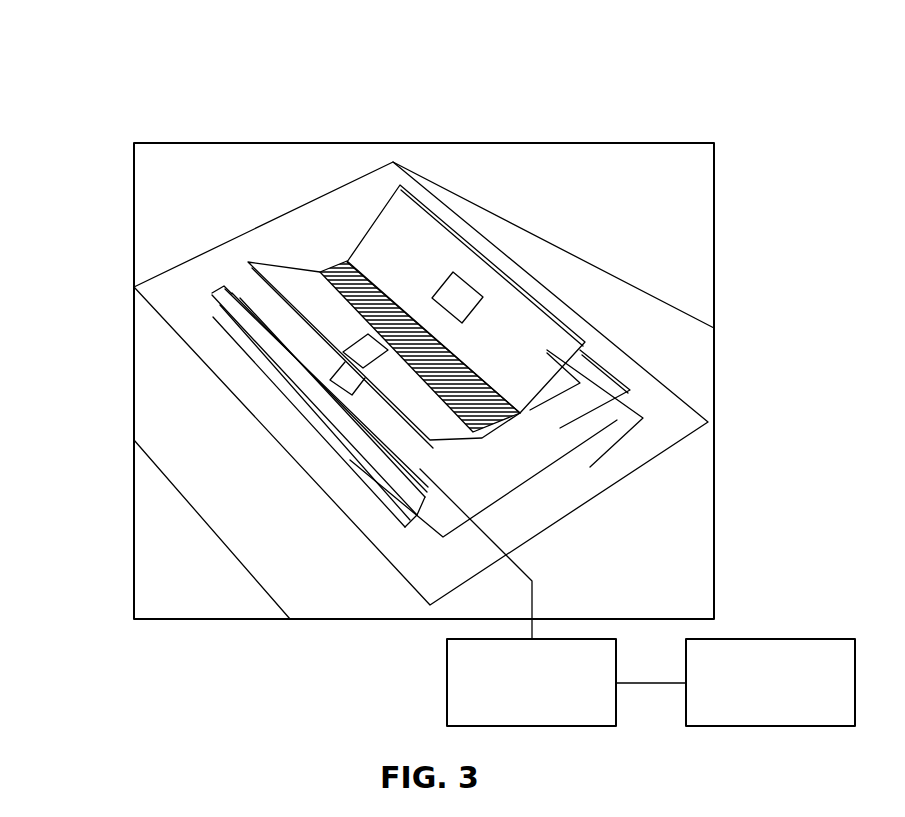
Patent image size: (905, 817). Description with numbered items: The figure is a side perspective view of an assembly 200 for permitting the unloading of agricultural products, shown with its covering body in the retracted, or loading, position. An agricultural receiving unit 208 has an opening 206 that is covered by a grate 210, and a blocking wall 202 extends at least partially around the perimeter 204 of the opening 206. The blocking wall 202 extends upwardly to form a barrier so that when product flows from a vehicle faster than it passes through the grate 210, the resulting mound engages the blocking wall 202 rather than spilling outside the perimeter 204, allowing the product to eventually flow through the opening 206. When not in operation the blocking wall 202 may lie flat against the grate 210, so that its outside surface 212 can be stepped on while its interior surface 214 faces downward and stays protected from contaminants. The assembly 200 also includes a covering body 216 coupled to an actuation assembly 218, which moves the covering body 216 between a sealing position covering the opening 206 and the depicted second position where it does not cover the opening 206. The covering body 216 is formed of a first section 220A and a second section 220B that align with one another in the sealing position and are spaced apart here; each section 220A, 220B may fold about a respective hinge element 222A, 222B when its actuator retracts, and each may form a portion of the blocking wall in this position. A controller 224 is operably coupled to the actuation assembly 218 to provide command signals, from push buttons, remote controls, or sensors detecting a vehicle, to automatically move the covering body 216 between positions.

The assembly 200 is at (712, 112).
The blocking wall 202 is at (323, 262).
The perimeter 204 is at (283, 283).
The opening 206 is at (337, 263).
The agricultural receiving unit 208 is at (566, 270).
The grate 210 is at (470, 424).
The outside surface 212 is at (273, 305).
The interior surface 214 is at (315, 262).
The covering body 216 is at (481, 190).
The actuation assembly 218 is at (447, 683).
The first section 220A is at (477, 287).
The second section 220B is at (320, 363).
The hinge element 222A is at (473, 373).
The hinge element 222B is at (357, 323).
The controller 224 is at (770, 639).